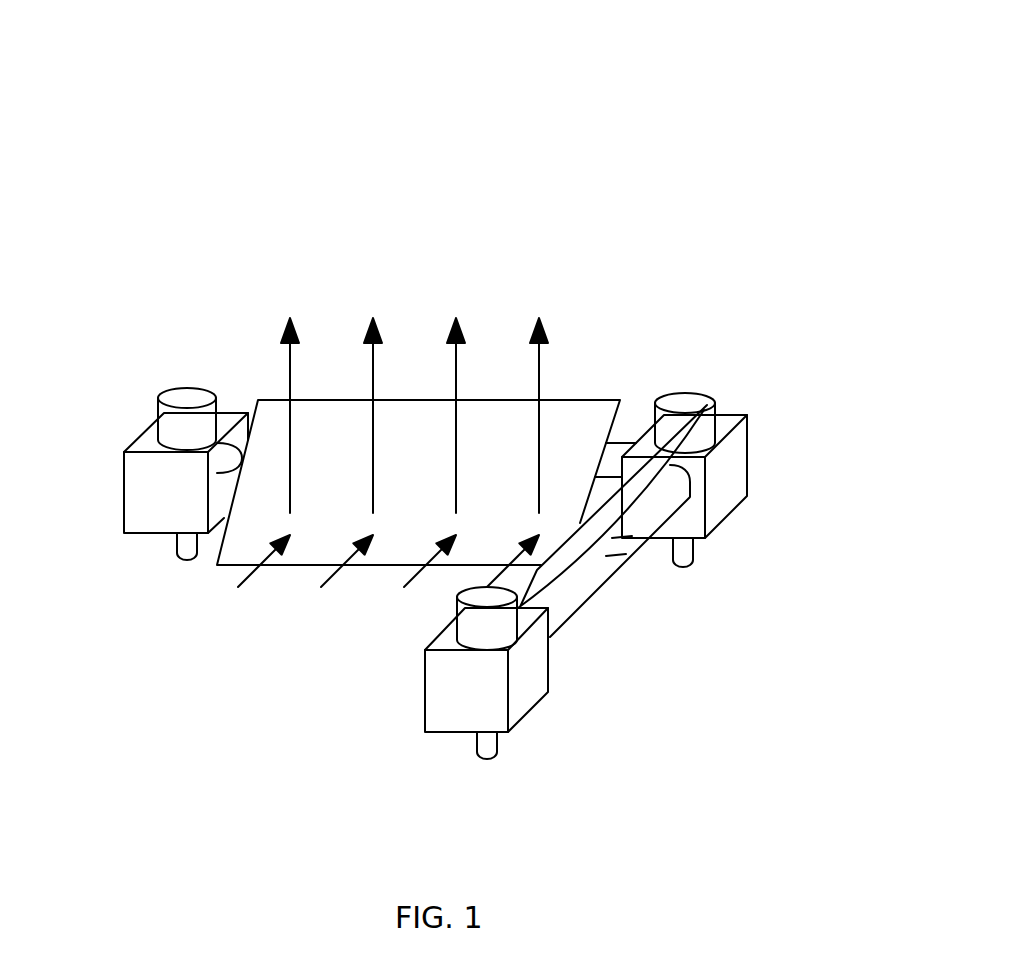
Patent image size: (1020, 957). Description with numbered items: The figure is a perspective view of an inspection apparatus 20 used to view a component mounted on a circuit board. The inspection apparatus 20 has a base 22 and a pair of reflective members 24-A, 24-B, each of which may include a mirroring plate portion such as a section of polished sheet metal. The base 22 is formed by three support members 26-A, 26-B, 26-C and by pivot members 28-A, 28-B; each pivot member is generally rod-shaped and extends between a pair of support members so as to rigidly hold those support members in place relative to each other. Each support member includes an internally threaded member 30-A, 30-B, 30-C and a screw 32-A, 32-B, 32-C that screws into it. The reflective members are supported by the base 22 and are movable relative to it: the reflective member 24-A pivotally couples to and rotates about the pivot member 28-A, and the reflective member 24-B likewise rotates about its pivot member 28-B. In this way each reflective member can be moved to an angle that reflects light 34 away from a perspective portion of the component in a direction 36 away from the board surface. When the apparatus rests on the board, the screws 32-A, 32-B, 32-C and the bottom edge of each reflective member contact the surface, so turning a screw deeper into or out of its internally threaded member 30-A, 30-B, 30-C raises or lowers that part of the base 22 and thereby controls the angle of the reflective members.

The inspection apparatus 20 is at (764, 77).
The base 22 is at (861, 291).
The reflective member 24-A is at (560, 412).
The reflective member 24-B is at (620, 498).
The support member 26-A is at (135, 462).
The support member 26-B is at (737, 414).
The support member 26-C is at (468, 690).
The pivot member 28-A is at (621, 445).
The pivot member 28-B is at (608, 558).
The internally threaded member 30-A is at (165, 513).
The internally threaded member 30-B is at (725, 422).
The internally threaded member 30-C is at (455, 702).
The screw 32-A is at (187, 400).
The screw 32-B is at (693, 403).
The screw 32-C is at (457, 612).
The light 34 is at (238, 587).
The direction 36 is at (290, 382).